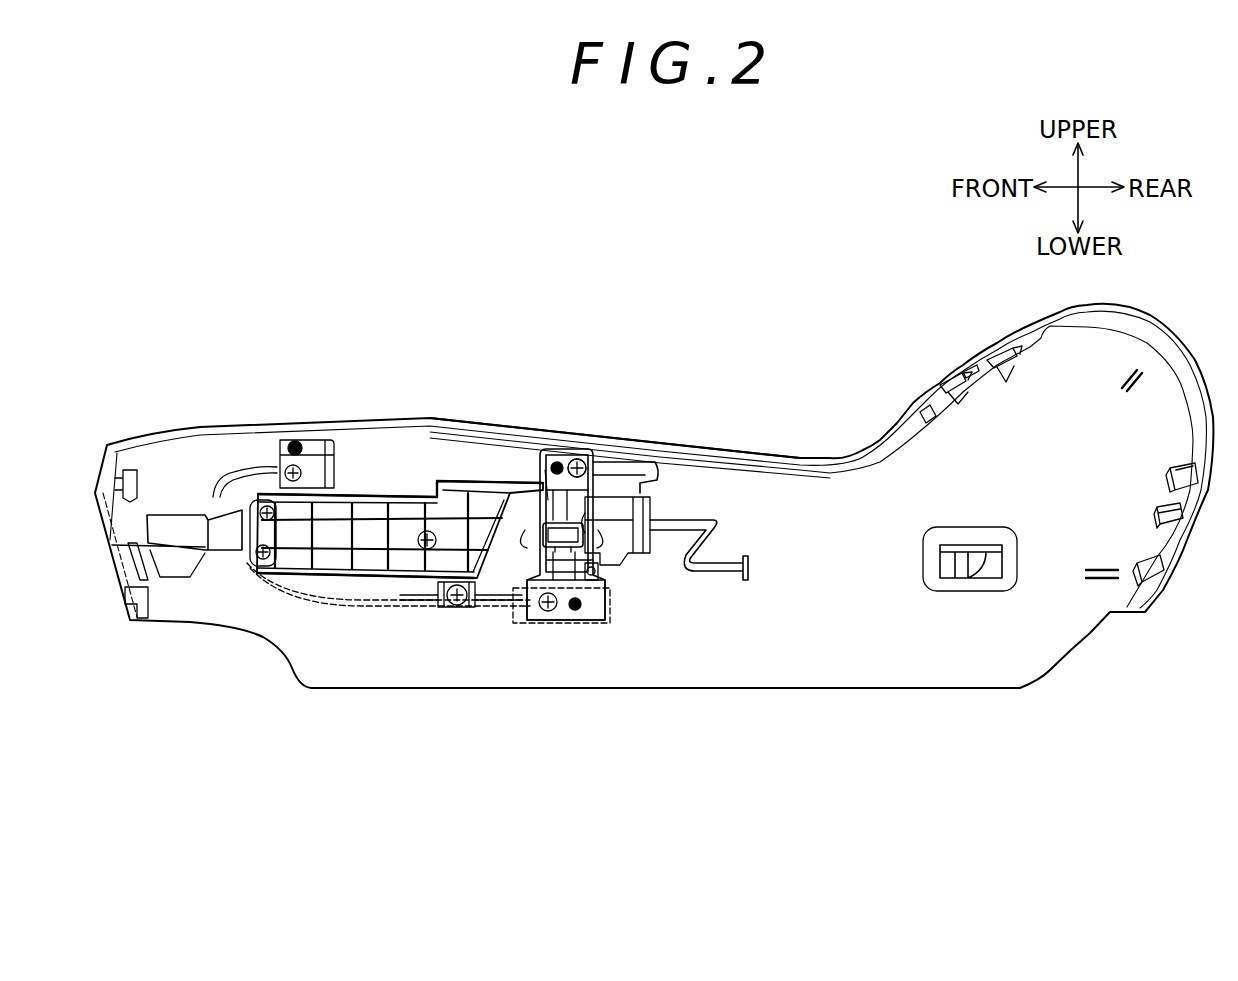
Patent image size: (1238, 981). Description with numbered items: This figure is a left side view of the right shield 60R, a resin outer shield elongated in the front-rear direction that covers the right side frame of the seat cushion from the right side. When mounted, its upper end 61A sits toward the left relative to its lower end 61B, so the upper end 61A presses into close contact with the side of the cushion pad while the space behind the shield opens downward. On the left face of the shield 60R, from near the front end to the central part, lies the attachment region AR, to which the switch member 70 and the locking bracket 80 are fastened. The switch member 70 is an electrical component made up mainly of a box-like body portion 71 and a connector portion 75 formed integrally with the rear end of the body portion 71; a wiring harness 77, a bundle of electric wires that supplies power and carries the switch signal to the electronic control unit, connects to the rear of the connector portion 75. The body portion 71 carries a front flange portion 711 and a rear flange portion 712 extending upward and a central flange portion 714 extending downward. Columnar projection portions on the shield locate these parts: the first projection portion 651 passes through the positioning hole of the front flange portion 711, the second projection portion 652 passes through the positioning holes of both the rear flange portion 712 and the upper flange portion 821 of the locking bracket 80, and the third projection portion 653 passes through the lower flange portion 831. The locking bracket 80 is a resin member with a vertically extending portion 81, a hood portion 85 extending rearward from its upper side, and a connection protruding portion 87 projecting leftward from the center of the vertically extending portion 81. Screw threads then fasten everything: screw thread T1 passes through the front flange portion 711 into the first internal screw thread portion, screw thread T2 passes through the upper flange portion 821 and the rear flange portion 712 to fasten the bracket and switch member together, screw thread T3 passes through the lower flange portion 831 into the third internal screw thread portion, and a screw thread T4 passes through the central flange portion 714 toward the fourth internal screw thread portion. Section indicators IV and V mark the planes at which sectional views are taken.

The shield 60R is at (866, 338).
The upper end of the shield 61A is at (708, 445).
The lower end of the shield 61B is at (753, 690).
The hood portion 85 is at (663, 467).
The first projection portion 651 is at (223, 407).
The front flange portion 711 is at (308, 442).
The screw thread T1 is at (294, 445).
The body portion 71 is at (396, 445).
The attachment region AR is at (364, 478).
The switch member 70 is at (465, 475).
The central flange portion 714 is at (430, 680).
The screw (tightening member T) T4 is at (467, 610).
The locking bracket 80 is at (550, 531).
The upper flange portion 821 is at (568, 458).
The second projection portion 652 is at (554, 460).
The screw thread T2 is at (576, 458).
The rear flange portion 712 is at (545, 458).
The vertically extending portion 81 is at (548, 510).
The connection protruding portion 87 is at (540, 545).
The lower flange portion 831 is at (567, 615).
The screw thread T3 is at (550, 612).
The third projection portion 653 is at (576, 612).
The connector portion 75 is at (627, 553).
The wiring harness 77 is at (723, 570).
The section line IV- IV is at (620, 405).
The section line V- V is at (575, 342).